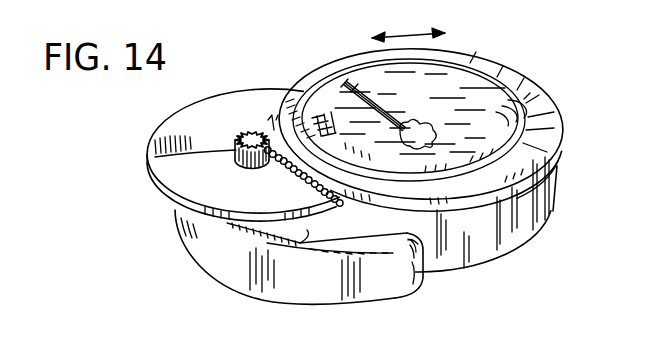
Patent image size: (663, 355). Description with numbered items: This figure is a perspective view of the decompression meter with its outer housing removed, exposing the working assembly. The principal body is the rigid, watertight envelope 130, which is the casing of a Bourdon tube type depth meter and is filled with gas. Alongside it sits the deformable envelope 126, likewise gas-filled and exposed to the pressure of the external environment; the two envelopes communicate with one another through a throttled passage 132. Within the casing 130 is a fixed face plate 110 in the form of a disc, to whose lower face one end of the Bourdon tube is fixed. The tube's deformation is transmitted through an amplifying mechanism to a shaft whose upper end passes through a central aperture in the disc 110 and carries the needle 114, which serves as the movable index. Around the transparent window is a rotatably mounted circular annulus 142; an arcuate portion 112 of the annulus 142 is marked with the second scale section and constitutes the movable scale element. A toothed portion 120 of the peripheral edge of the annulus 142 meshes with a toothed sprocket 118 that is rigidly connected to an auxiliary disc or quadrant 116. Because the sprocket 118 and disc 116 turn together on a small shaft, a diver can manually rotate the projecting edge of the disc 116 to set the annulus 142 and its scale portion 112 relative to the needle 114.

The fixed face plate 110 is at (532, 93).
The arcuate portion of the annulus 112 is at (508, 62).
The needle 114 is at (365, 88).
The auxiliary disc or quadrant 116 is at (153, 182).
The toothed sprocket 118 is at (155, 157).
The toothed portion of the peripheral edge 120 is at (268, 116).
The deformable envelope 126 is at (380, 284).
The rigid watertight envelope 130 is at (467, 235).
The throttled passage 132 is at (300, 243).
The circular annulus 142 is at (534, 238).